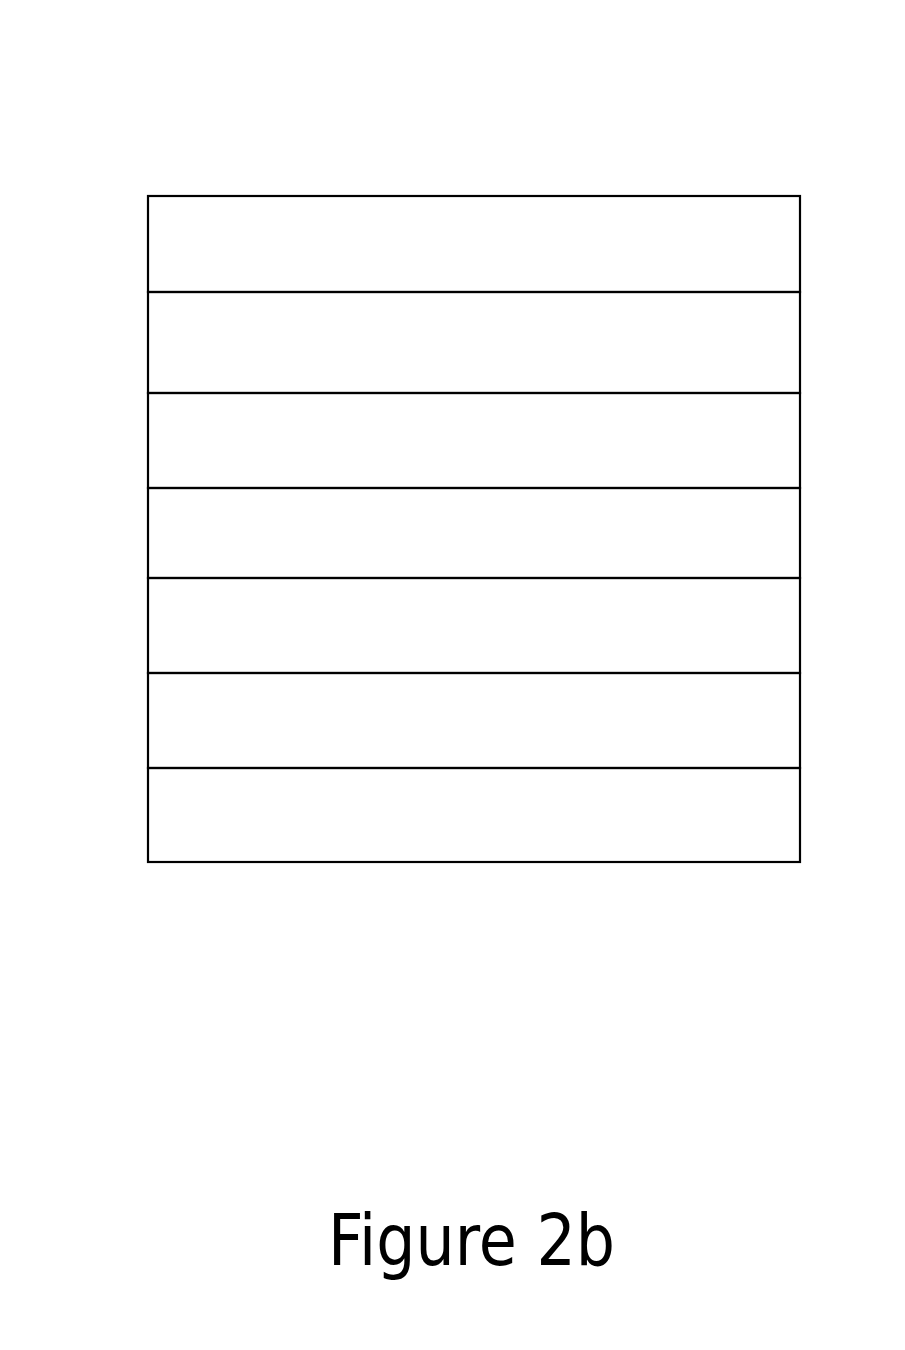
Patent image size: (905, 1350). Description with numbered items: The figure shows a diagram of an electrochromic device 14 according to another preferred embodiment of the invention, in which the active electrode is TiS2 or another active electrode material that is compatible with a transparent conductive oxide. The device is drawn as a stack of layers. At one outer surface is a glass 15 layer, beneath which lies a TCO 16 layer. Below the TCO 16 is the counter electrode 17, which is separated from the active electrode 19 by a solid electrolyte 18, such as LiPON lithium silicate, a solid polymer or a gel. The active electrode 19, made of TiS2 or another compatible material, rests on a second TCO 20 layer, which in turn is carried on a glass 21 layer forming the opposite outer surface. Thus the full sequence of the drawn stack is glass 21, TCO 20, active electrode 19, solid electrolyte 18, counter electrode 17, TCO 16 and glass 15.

The electrochromic device 14 is at (411, 436).
The glass 15 is at (474, 244).
The TCO 16 is at (474, 344).
The counter electrode 17 is at (474, 441).
The solid electrolyte 18 is at (474, 533).
The active electrode 19 is at (474, 625).
The TCO 20 is at (474, 720).
The glass 21 is at (474, 815).